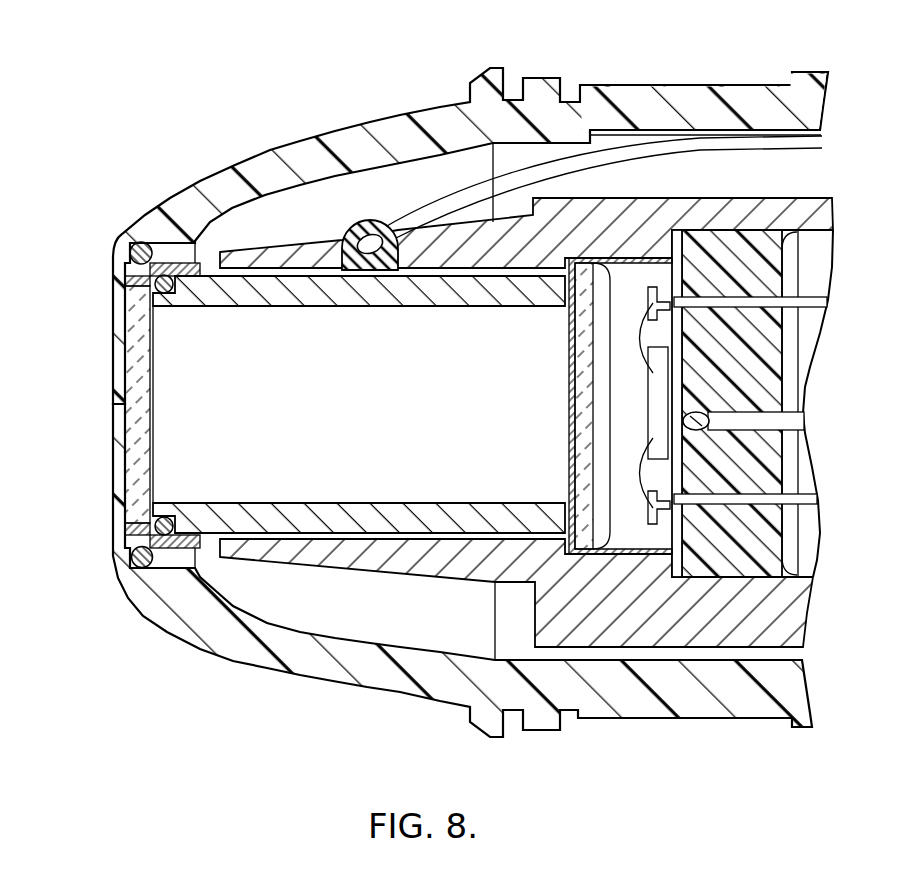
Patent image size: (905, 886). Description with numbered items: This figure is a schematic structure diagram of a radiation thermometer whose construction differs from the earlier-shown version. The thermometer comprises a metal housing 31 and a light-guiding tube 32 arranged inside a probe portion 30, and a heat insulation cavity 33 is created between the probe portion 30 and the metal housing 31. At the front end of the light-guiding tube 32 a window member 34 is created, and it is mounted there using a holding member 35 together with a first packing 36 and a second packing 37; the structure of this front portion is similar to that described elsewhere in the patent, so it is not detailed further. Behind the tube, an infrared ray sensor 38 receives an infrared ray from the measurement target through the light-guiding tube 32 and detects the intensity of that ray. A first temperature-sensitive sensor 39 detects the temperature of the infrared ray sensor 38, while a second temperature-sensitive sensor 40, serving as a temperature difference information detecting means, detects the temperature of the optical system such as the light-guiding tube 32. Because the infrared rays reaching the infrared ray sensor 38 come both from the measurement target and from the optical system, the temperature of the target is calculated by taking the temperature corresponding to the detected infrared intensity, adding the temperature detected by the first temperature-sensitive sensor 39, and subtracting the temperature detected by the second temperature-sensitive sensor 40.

The probe portion 30 is at (393, 138).
The metal housing 31 is at (600, 605).
The light-guiding tube 32 is at (400, 520).
The heat insulation cavity 33 is at (278, 588).
The window member 34 is at (137, 393).
The holding member 35 is at (150, 276).
The first packing 36 is at (128, 241).
The second packing 37 is at (152, 528).
The infrared ray sensor 38 is at (655, 373).
The first temperature-sensitive sensor 39 is at (700, 414).
The second temperature-sensitive sensor 40 is at (362, 237).